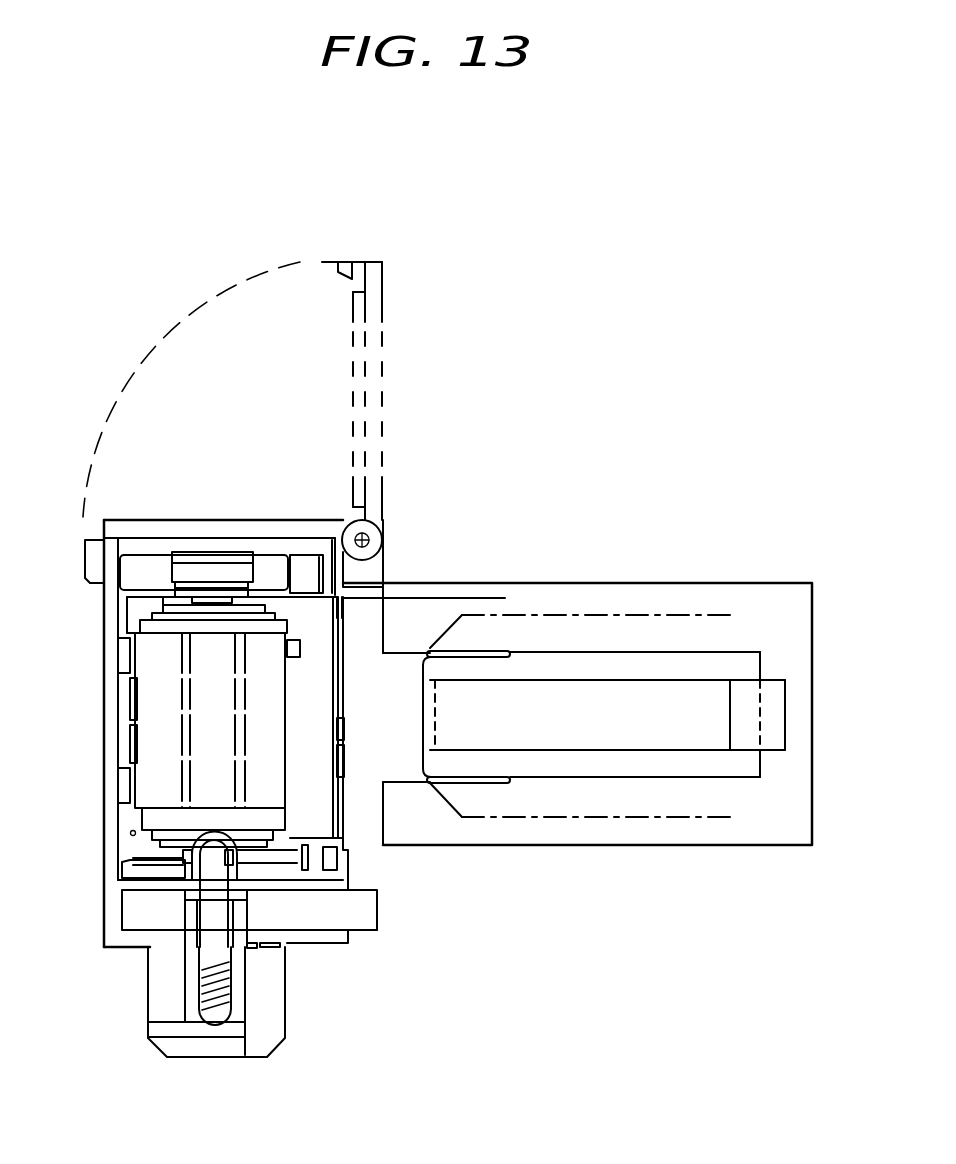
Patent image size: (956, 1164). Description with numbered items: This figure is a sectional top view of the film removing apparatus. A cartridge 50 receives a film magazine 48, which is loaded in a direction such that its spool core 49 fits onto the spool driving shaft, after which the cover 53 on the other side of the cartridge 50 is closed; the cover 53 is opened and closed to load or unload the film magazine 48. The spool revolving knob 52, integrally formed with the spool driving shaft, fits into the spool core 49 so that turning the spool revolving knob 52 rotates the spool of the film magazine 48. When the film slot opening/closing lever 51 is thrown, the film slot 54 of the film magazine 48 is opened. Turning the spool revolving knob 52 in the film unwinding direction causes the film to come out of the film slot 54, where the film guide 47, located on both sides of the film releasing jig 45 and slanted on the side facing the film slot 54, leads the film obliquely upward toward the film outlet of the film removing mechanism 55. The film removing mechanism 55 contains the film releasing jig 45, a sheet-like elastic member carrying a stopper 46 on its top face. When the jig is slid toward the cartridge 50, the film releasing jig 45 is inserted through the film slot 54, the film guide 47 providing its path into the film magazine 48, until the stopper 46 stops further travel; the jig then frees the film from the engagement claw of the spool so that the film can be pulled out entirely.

The film releasing jig 45 is at (713, 612).
The stopper 46 is at (778, 693).
The film guide 47 is at (417, 612).
The film magazine 48 is at (263, 553).
The spool core 49 is at (173, 833).
The cartridge 50 is at (102, 640).
The film slot opening/closing lever 51 is at (377, 908).
The spool revolving knob 52 is at (148, 995).
The cover 53 is at (382, 312).
The film slot 54 is at (327, 810).
The film removing mechanism 55 is at (817, 802).